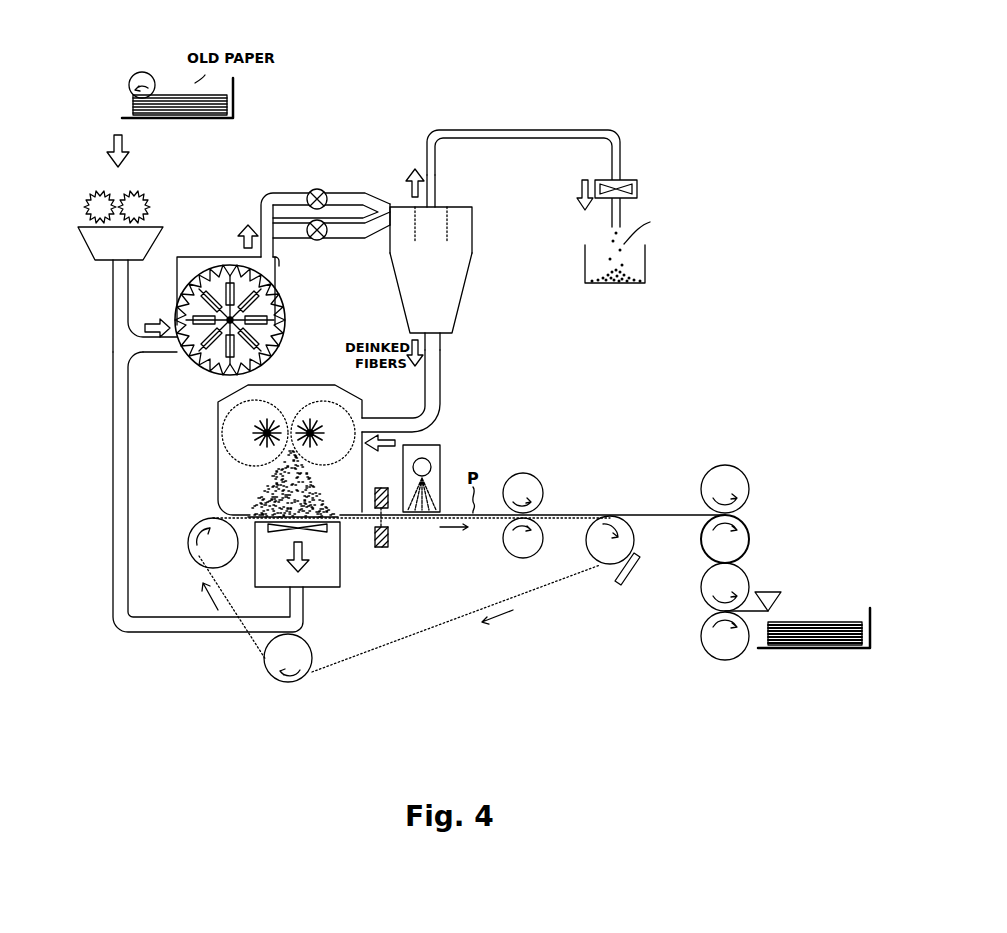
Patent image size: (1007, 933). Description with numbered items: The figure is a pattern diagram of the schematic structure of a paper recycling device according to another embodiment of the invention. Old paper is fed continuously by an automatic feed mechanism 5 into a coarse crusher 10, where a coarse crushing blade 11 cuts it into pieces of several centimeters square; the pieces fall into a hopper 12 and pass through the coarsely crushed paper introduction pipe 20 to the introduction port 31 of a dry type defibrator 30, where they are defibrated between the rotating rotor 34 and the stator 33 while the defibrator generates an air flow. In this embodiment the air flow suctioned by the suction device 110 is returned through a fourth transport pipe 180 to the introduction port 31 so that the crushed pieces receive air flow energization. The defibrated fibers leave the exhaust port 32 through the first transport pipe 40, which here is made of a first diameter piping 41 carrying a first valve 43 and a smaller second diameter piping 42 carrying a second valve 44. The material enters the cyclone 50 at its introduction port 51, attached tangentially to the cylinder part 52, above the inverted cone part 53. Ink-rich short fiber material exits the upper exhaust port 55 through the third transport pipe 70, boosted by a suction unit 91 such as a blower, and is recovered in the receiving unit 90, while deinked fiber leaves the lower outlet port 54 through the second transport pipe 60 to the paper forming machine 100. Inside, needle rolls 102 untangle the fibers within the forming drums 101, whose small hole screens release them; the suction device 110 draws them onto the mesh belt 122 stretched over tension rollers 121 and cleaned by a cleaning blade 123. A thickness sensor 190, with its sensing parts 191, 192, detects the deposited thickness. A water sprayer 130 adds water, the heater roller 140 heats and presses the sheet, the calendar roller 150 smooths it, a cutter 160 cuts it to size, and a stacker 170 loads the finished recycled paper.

The automatic feed mechanism 5 is at (238, 99).
The coarse crusher 10 is at (104, 142).
The coarse crushing blade 11 is at (143, 196).
The hopper 12 is at (98, 245).
The coarsely crushed paper introduction pipe 20 is at (113, 305).
The dry type defibrator 30 is at (247, 303).
The introduction port 31 is at (244, 329).
The exhaust port 32 is at (280, 263).
The stator 33 is at (267, 304).
The rotor 34 is at (262, 345).
The first transport pipe 40 is at (314, 181).
The first diameter piping 41 is at (355, 238).
The second diameter piping 42 is at (339, 193).
The first valve 43 is at (316, 240).
The second valve 44 is at (313, 190).
The cyclone 50 is at (454, 261).
The introduction port 51 is at (392, 205).
The cylinder part 52 is at (474, 230).
The inverted cone part 53 is at (460, 298).
The lower outlet port 54 is at (440, 336).
The upper exhaust port 55 is at (435, 205).
The second transport pipe 60 is at (442, 413).
The third transport pipe 70 is at (527, 130).
The receiving unit 90 is at (648, 267).
The suction unit 91 is at (638, 190).
The paper forming machine 100 is at (257, 440).
The forming drum 101 is at (232, 458).
The needle roll 102 is at (306, 425).
The suction device 110 is at (338, 586).
The tension roller 121 is at (411, 599).
The mesh belt 122 is at (420, 650).
The cleaning blade 123 is at (622, 585).
The water sprayer 130 is at (438, 457).
The heater roller 140 is at (540, 478).
The calendar roller 150 is at (740, 467).
The cutter 160 is at (771, 592).
The stacker 170 is at (805, 648).
The fourth transport pipe 180 is at (113, 468).
The thickness sensor 190 is at (404, 522).
The upper sensor 191 is at (381, 489).
The lower sensor 192 is at (381, 548).